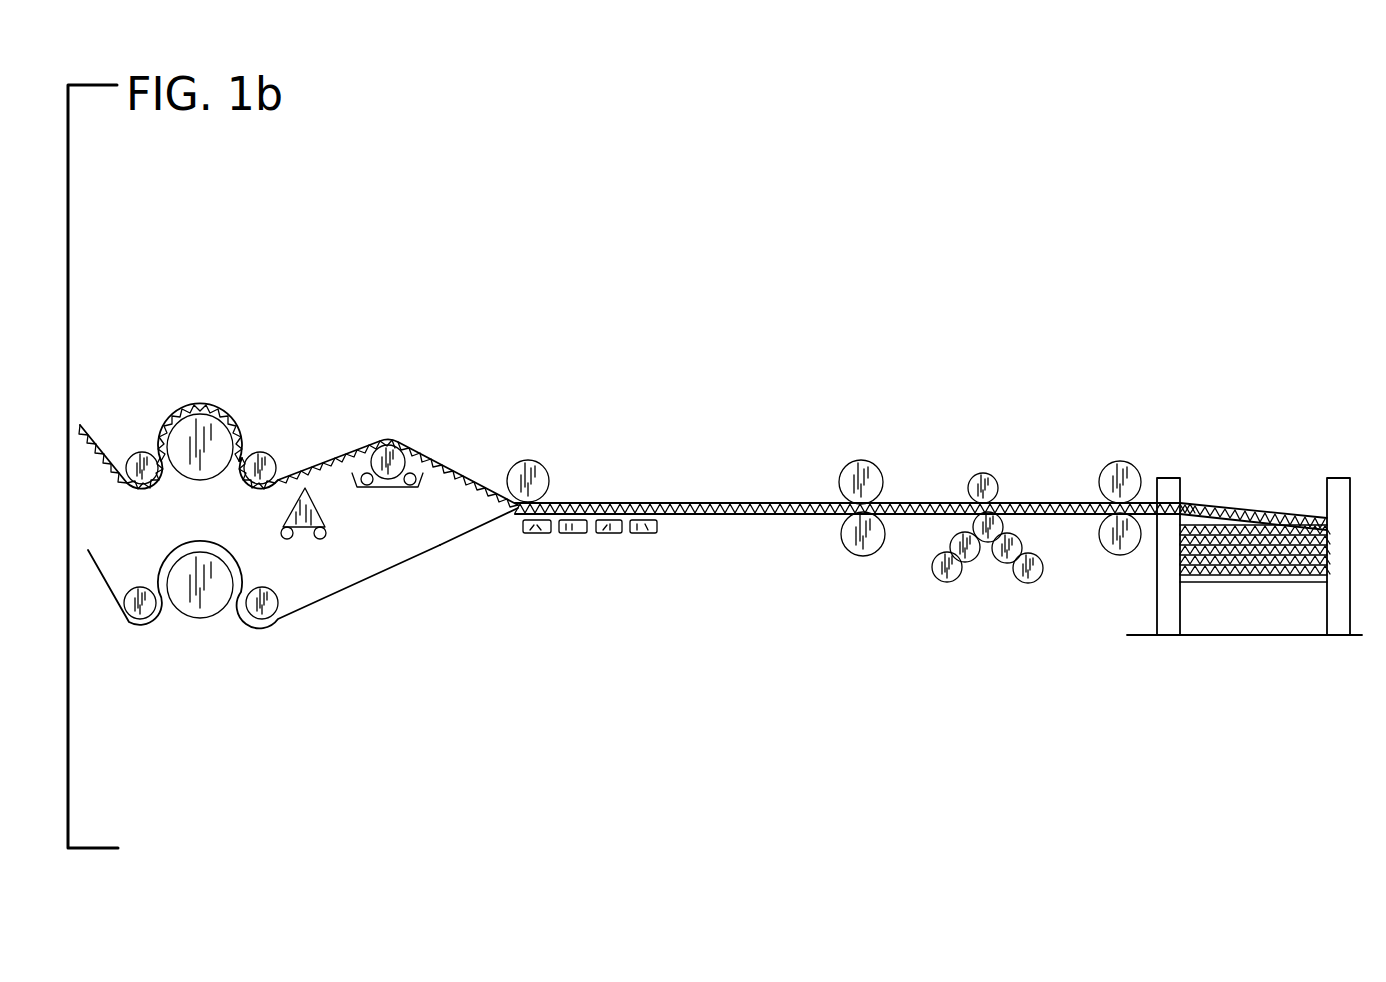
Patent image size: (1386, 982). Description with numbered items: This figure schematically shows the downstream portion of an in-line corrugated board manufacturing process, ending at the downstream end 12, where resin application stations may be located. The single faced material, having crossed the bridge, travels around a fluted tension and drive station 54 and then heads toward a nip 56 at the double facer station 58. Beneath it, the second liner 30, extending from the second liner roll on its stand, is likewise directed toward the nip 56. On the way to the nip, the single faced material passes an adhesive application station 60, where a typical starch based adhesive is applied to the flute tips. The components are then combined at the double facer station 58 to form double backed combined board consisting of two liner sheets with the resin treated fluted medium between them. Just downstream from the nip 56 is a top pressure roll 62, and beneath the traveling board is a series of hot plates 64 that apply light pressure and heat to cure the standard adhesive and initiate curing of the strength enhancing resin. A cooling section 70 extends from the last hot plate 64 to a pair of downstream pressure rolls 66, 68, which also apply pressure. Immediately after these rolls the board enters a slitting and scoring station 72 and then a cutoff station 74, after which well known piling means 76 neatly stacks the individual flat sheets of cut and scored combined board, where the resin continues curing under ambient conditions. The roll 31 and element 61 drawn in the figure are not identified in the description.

The downstream end 12 is at (1080, 416).
The second liner 30 is at (366, 580).
The lower roll 31 is at (207, 613).
The fluted tension and drive station 54 is at (183, 495).
The nip 56 is at (493, 513).
The double facer station 58 is at (493, 536).
The adhesive application station 60 is at (407, 443).
The feed hopper 61 is at (293, 499).
The top pressure roll 62 is at (543, 478).
The hot plates 64 is at (607, 534).
The downstream pressure roll 66 is at (872, 466).
The downstream pressure roll 68 is at (845, 542).
The cooling section 70 is at (726, 488).
The slitting and scoring station 72 is at (1000, 466).
The cutoff station 74 is at (1142, 456).
The piling means 76 is at (1187, 648).